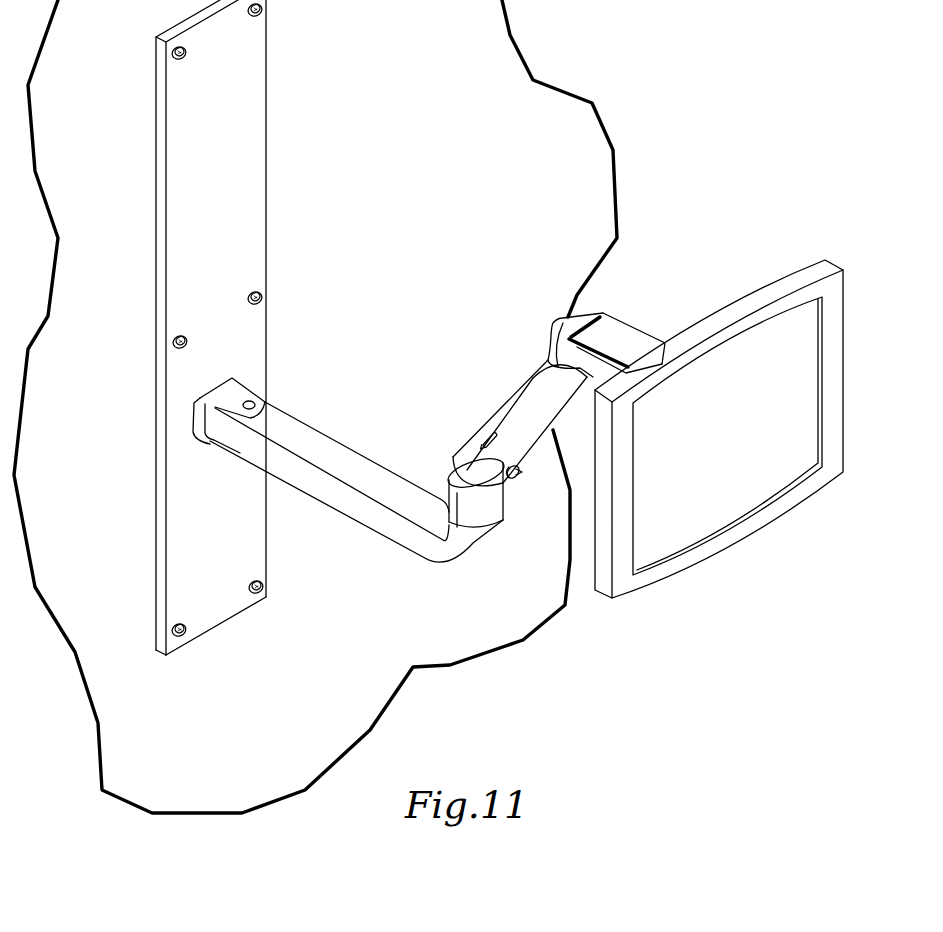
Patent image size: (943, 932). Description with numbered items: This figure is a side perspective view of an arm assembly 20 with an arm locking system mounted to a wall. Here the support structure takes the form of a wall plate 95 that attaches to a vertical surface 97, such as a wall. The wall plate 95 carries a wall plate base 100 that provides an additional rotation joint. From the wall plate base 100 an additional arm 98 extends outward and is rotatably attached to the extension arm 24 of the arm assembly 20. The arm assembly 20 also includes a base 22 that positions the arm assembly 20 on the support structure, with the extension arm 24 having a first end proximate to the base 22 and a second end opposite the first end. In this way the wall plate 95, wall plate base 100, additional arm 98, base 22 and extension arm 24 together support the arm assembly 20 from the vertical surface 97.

The arm assembly 20 is at (562, 325).
The base 22 is at (477, 515).
The extension arm 24 is at (553, 432).
The wall plate 95 is at (237, 103).
The vertical surface 97 is at (389, 196).
The additional arm 98 is at (388, 535).
The wall plate base 100 is at (245, 393).